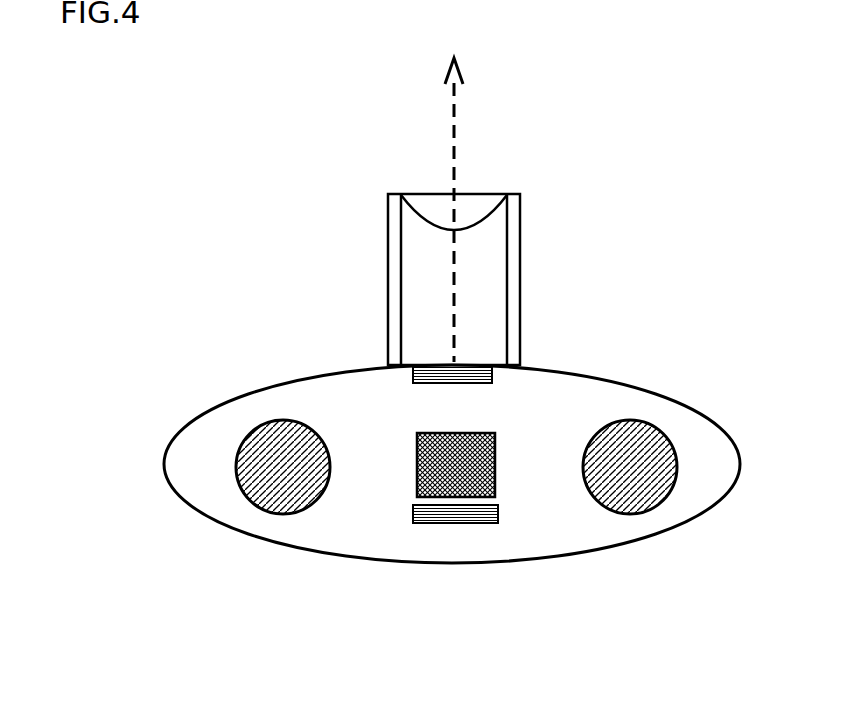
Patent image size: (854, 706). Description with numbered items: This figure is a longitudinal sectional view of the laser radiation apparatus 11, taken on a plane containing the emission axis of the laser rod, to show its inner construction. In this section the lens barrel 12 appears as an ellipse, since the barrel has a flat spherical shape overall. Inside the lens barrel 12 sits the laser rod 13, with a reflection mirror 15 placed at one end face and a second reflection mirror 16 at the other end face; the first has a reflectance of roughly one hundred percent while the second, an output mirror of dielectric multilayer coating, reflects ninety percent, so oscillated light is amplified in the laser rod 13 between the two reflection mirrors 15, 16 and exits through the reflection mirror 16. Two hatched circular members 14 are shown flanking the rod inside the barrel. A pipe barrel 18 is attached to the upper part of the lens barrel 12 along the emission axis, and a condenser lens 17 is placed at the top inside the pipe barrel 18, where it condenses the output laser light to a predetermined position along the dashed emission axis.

The laser radiation apparatus 11 is at (195, 328).
The lens barrel 12 is at (340, 555).
The laser rod 13 is at (423, 435).
The lead wires 14 is at (643, 430).
The reflection mirror 15 is at (455, 513).
The reflection mirror 16 is at (478, 372).
The condenser lens 17 is at (483, 202).
The pipe barrel 18 is at (393, 254).